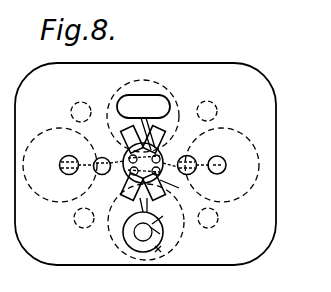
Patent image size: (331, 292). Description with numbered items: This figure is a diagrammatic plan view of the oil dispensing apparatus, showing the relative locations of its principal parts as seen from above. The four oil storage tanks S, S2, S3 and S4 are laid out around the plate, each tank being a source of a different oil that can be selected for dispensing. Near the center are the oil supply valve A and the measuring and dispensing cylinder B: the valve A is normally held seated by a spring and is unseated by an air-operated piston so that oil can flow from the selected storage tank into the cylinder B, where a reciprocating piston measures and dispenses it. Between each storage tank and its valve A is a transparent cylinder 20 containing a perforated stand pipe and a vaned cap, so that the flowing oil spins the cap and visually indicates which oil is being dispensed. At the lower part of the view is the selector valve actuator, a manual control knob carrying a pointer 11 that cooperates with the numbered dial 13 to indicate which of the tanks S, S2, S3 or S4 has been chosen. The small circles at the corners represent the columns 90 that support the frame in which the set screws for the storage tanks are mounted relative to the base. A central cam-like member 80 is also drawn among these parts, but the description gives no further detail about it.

The storage tank S is at (56, 203).
The storage tank S2 is at (175, 237).
The storage tank S3 is at (173, 91).
The storage tank S4 is at (256, 186).
The column 90 is at (84, 229).
The transparent cylinder 20 is at (94, 160).
The cam wheel 80 is at (164, 158).
The measuring and dispensing cylinder B is at (125, 172).
The oil supply valve A is at (173, 189).
The pointer 11 is at (166, 216).
The numbered dial 13 is at (163, 237).